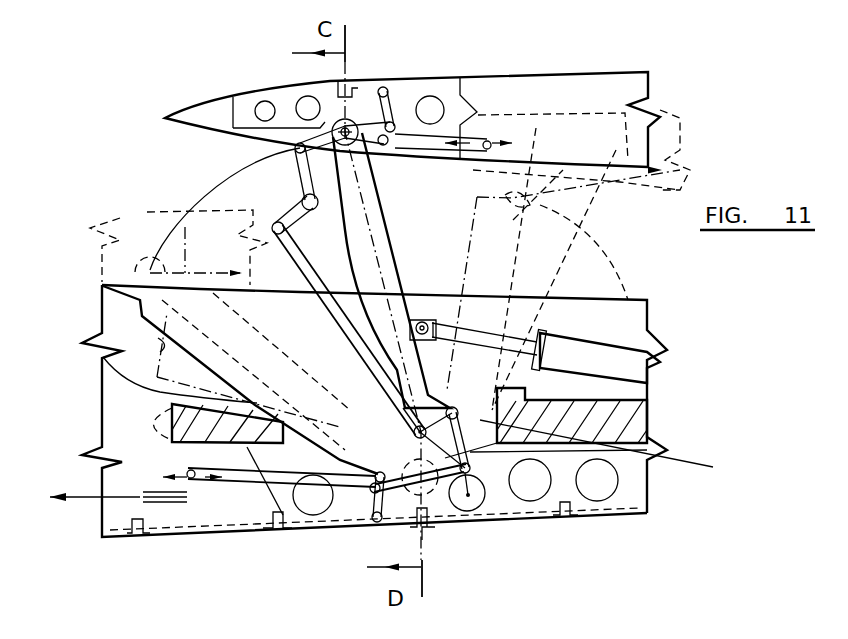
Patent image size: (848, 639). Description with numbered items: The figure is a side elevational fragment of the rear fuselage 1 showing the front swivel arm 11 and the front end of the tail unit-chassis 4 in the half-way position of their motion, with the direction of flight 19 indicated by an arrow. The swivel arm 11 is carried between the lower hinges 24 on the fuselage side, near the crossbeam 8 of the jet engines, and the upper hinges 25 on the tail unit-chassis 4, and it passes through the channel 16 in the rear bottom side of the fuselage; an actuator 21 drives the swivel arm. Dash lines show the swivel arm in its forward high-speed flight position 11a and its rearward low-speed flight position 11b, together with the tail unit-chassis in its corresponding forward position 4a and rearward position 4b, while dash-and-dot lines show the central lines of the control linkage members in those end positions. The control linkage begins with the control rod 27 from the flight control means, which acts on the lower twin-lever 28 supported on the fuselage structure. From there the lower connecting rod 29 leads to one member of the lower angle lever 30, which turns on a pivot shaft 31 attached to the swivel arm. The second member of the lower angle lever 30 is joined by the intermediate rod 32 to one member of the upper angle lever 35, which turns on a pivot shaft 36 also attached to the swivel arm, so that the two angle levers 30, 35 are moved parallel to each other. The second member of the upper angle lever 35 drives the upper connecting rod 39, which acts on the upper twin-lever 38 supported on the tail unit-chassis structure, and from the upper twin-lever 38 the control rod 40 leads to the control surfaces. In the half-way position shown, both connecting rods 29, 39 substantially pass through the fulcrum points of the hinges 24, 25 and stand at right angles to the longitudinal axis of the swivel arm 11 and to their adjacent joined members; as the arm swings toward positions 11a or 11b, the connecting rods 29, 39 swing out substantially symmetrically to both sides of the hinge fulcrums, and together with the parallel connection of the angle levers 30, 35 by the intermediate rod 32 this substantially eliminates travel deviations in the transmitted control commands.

The fuselage 1 is at (637, 513).
The tail unit-chassis 4 is at (213, 105).
The tail unit-chassis in its forward high-speed flight position 4a is at (147, 212).
The tail unit-chassis in its rearward low-speed flight position 4b is at (680, 118).
The crossbeam of the jet engines 8 is at (627, 420).
The front swivel arms 11 is at (372, 253).
The front swivel arms in their forward high-speed flight position 11a is at (170, 268).
The front swivel arms in their rearward low-speed flight position 11b is at (568, 242).
The channel in the rear bottom side of the fuselage 16 is at (565, 490).
The direction of flight 19 is at (95, 500).
The actuator 21 is at (600, 360).
The lower hinges of the swivel arms 24 is at (440, 480).
The upper hinges of the swivel arms 25 is at (335, 124).
The control rod from the flight control means 27 is at (247, 447).
The lower twin-lever 28 is at (373, 510).
The lower connecting rod 29 is at (476, 500).
The lower angle lever 30 is at (563, 488).
The pivot shaft for the lower angle lever 31 is at (713, 467).
The intermediate rod 32 is at (345, 317).
The upper angle lever 35 is at (316, 177).
The pivot shaft for the upper angle lever 36 is at (303, 202).
The upper twin-lever 38 is at (390, 115).
The upper connecting rod 39 is at (381, 90).
The control rod to the control surfaces 40 is at (482, 133).